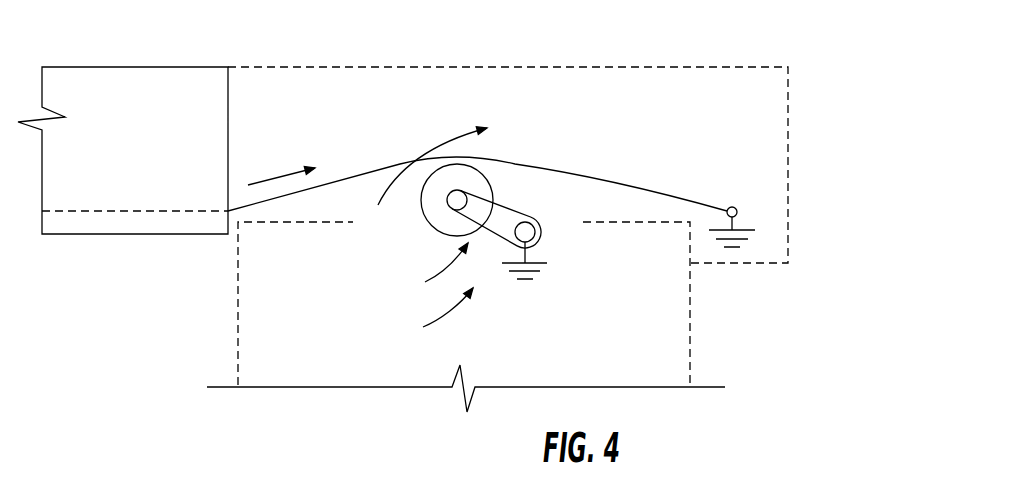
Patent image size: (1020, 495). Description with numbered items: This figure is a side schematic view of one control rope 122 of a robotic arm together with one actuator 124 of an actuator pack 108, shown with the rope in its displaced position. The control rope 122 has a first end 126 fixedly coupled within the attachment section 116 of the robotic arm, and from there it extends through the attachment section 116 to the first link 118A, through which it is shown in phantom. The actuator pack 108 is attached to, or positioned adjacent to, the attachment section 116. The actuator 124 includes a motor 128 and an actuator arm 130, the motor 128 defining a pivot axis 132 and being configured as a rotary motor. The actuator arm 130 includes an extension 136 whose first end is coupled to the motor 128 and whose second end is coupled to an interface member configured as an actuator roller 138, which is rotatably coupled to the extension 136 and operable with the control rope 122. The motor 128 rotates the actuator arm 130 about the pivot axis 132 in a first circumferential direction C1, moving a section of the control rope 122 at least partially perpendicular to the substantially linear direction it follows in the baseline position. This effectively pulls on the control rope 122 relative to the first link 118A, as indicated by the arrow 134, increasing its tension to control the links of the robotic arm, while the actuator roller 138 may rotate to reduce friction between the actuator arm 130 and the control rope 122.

The actuator pack 108 is at (677, 298).
The attachment section 116 is at (760, 88).
The first link 118A is at (143, 85).
The control rope 122 is at (593, 180).
The actuator 124 is at (430, 318).
The first end 126 is at (725, 205).
The motor 128 is at (543, 243).
The actuator arm 130 is at (425, 272).
The pivot axis 132 is at (543, 228).
The arrow 134 is at (283, 178).
The extension 136 is at (498, 222).
The actuator roller 138 is at (430, 207).
The first circumferential direction C1 is at (450, 138).